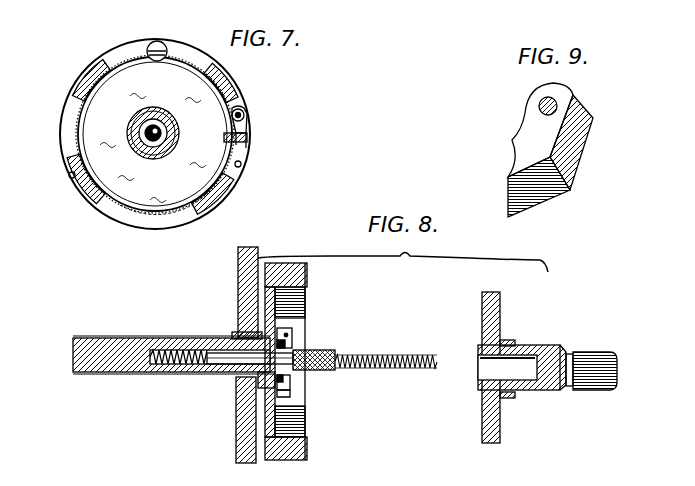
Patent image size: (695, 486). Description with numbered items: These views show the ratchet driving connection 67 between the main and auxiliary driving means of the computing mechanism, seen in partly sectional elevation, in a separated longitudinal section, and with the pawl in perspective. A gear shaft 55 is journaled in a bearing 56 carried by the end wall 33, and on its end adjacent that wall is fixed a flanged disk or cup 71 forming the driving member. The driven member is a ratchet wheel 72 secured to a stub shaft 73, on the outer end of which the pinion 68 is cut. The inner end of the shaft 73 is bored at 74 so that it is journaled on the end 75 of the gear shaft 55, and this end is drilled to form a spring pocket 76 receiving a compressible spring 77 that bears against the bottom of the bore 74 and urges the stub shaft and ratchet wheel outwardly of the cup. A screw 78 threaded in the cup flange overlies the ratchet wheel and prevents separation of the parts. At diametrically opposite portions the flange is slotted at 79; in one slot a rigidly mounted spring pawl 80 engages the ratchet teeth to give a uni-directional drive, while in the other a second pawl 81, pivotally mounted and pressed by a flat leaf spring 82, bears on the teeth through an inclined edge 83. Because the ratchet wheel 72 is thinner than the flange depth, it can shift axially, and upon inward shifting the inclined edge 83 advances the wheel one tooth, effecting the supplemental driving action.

In FIG. 8, the end wall 33 is at (237, 273).
In FIG. 8, the gear shaft 55 is at (110, 347).
In FIG. 8, the bearing 56 is at (233, 337).
In FIG. 7, the ratchet driving connection 67 is at (92, 217).
In FIG. 8, the ratchet driving connection 67 is at (327, 437).
In FIG. 8, the pinion 68 is at (605, 352).
In FIG. 7, the flanged disk or cup 71 is at (125, 217).
In FIG. 8, the flanged disk or cup 71 is at (308, 292).
In FIG. 7, the ratchet wheel 72 is at (205, 152).
In FIG. 8, the ratchet wheel 72 is at (503, 320).
In FIG. 7, the shaft 73 is at (150, 115).
In FIG. 8, the shaft 73 is at (560, 352).
In FIG. 8, the bore 74 is at (482, 373).
In FIG. 7, the end of shaft 75 is at (163, 157).
In FIG. 8, the end of shaft 75 is at (327, 350).
In FIG. 8, the spring pocket 76 is at (203, 373).
In FIG. 7, the compressible spring 77 is at (142, 153).
In FIG. 8, the compressible spring 77 is at (430, 333).
In FIG. 7, the screw 78 is at (160, 42).
In FIG. 7, the slot 79 is at (72, 100).
In FIG. 8, the slot 79 is at (285, 397).
In FIG. 7, the spring pawl 80 is at (78, 162).
In FIG. 7, the second pawl 81 is at (245, 122).
In FIG. 8, the second pawl 81 is at (283, 340).
In FIG. 9, the second pawl 81 is at (535, 127).
In FIG. 7, the flat leaf spring 82 is at (242, 163).
In FIG. 8, the flat leaf spring 82 is at (292, 383).
In FIG. 9, the inclined edge 83 is at (508, 197).